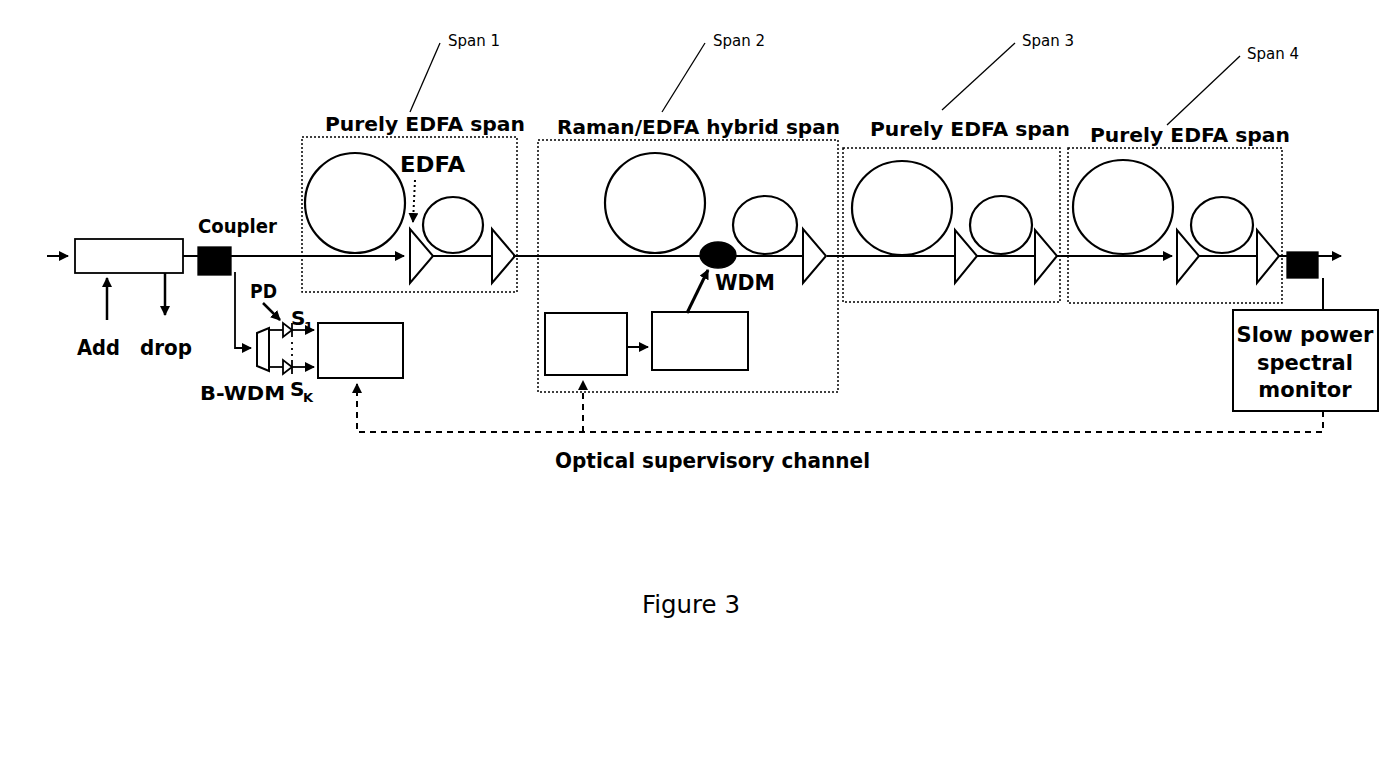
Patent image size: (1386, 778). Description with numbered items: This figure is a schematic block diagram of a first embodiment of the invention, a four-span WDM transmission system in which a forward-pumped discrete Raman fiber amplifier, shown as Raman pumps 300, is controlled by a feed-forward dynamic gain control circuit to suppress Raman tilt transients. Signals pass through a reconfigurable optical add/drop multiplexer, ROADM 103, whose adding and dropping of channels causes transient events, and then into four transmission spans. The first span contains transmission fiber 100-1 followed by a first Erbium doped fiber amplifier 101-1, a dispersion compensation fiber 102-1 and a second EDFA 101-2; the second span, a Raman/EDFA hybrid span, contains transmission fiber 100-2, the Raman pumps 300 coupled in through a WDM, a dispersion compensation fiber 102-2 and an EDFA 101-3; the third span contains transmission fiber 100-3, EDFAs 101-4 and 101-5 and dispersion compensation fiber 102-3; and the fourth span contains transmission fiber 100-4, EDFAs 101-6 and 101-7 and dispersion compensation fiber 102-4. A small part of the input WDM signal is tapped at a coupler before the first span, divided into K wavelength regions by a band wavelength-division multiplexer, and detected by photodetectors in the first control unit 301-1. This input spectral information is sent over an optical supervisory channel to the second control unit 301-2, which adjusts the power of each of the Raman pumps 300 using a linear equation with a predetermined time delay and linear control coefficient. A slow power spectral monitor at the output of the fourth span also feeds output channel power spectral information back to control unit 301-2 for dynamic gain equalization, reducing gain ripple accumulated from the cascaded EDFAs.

The reconfigurable optical add/drop multiplexer (ROADM) 103 is at (115, 238).
The transmission fiber 100-1 is at (313, 172).
The transmission fiber 100-2 is at (615, 170).
The transmission fiber 100-3 is at (928, 180).
The transmission fiber 100-4 is at (1153, 180).
The first Erbium doped fiber amplifier (EDFA) 101-1 is at (408, 280).
The second Erbium doped fiber amplifier (EDFA) 101-2 is at (492, 280).
The Erbium doped fiber amplifier (EDFA) 101-3 is at (802, 287).
The first Erbium doped fiber amplifier (EDFA) 101-4 is at (955, 279).
The second Erbium doped fiber amplifier (EDFA) 101-5 is at (1035, 279).
The first Erbium doped fiber amplifier (EDFA) 101-6 is at (1177, 279).
The second Erbium doped fiber amplifier (EDFA) 101-7 is at (1257, 279).
The dispersion compensation fiber (DCF) 102-1 is at (467, 197).
The dispersion compensation fiber (DCF) 102-2 is at (775, 197).
The dispersion compensation fiber (DCF) 102-3 is at (1013, 197).
The dispersion compensation fiber (DCF) 102-4 is at (1217, 193).
The forward-pumped discrete Raman fiber amplifier (Raman pumps) 300 is at (748, 363).
The first control unit (span 1 circuit) 301-1 is at (403, 350).
The second control unit (span 2 circuit) 301-2 is at (538, 367).